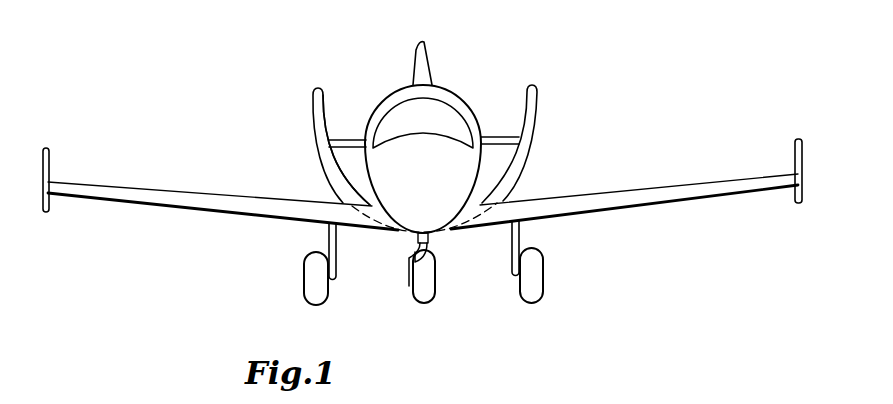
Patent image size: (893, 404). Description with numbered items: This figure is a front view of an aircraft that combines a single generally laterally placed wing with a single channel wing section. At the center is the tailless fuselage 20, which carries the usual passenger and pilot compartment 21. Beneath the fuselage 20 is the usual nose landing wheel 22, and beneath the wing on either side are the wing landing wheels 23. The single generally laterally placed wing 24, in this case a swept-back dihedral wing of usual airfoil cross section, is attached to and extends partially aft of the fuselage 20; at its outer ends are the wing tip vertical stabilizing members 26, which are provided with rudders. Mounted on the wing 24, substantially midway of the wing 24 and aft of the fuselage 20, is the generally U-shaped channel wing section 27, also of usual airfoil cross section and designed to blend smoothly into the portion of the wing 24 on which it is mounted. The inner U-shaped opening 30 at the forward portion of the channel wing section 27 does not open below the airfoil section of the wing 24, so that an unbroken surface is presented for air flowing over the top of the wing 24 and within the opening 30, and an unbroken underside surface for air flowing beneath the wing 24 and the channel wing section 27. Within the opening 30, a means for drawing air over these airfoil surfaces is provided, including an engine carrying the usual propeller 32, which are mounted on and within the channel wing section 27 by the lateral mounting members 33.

The tailless fuselage 20 is at (422, 176).
The passenger and pilot compartment 21 is at (458, 115).
The nose landing wheel 22 is at (416, 296).
The wing landing wheels 23 is at (310, 283).
The generally laterally placed wing 24 is at (185, 200).
The wing tip vertical stabilizing members 26 is at (49, 164).
The channel wing section 27 is at (312, 110).
The inner U-shaped opening 30 is at (325, 115).
The propeller 32 is at (425, 62).
The lateral mounting members 33 is at (360, 134).